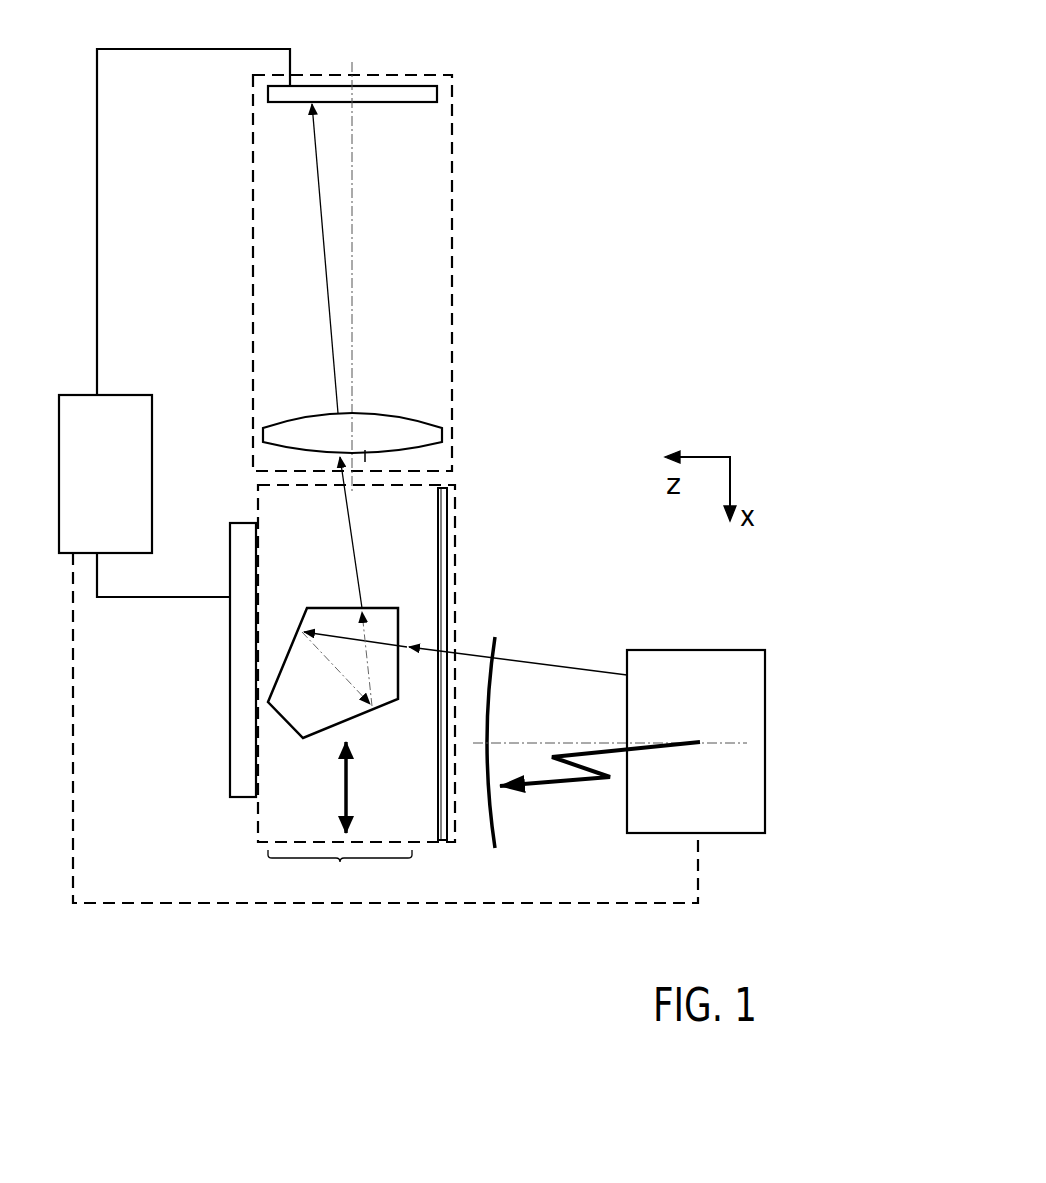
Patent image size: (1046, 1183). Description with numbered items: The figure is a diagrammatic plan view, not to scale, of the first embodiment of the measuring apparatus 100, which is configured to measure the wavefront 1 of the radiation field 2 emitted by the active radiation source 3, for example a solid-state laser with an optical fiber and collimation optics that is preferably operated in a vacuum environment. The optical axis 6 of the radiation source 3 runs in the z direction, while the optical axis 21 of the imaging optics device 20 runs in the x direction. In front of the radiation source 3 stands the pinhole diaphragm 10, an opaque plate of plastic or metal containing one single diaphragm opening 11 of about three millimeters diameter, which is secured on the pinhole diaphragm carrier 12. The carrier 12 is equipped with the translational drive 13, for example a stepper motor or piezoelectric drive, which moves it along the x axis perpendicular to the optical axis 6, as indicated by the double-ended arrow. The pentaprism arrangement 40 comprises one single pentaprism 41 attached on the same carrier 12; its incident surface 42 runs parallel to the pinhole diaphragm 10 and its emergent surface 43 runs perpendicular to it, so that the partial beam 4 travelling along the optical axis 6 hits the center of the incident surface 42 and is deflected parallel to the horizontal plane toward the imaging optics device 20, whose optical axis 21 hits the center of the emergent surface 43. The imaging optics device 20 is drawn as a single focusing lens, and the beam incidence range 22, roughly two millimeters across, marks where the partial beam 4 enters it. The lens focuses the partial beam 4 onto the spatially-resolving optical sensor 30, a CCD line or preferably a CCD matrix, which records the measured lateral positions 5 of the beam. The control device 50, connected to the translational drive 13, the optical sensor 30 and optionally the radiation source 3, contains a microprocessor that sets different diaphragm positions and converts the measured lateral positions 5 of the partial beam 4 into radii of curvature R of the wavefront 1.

The measuring apparatus 100 is at (640, 175).
The wavefront 1 is at (497, 832).
The radiation field 2 is at (543, 723).
The radiation source 3 is at (713, 660).
The partial beam 4 is at (328, 313).
The measured lateral positions 5 is at (312, 97).
The optical axis of the radiation source 6 is at (548, 743).
The pinhole diaphragm 10 is at (361, 679).
The diaphragm opening 11 is at (452, 625).
The pinhole diaphragm carrier 12 is at (267, 818).
The translational drive 13 is at (237, 745).
The imaging optics device 20 is at (402, 277).
The optical axis of the imaging optics device 21 is at (352, 302).
The beam incidence range 22 is at (366, 460).
The optical sensor 30 is at (290, 62).
The pentaprism arrangement 40 is at (354, 901).
The pentaprism 41 is at (281, 654).
The incident surface 42 is at (400, 677).
The emergent surface 43 is at (353, 607).
The control device 50 is at (139, 548).
The radii of curvature R is at (567, 778).